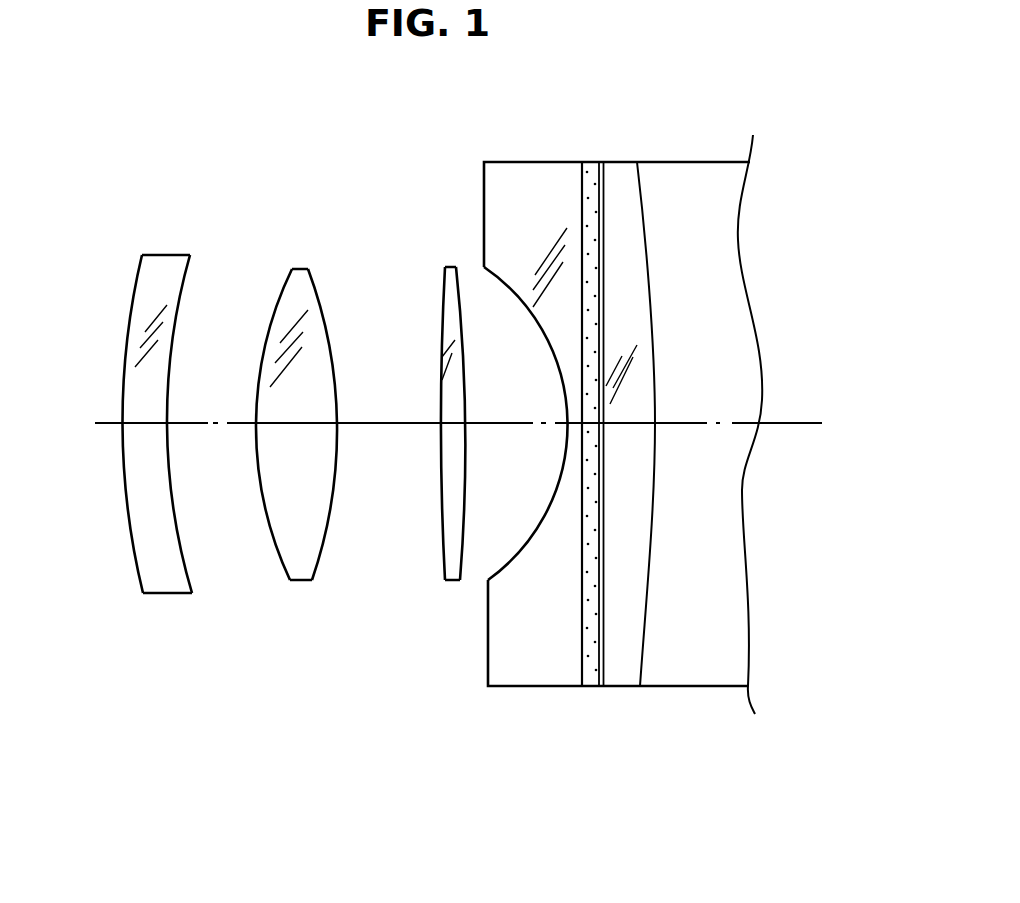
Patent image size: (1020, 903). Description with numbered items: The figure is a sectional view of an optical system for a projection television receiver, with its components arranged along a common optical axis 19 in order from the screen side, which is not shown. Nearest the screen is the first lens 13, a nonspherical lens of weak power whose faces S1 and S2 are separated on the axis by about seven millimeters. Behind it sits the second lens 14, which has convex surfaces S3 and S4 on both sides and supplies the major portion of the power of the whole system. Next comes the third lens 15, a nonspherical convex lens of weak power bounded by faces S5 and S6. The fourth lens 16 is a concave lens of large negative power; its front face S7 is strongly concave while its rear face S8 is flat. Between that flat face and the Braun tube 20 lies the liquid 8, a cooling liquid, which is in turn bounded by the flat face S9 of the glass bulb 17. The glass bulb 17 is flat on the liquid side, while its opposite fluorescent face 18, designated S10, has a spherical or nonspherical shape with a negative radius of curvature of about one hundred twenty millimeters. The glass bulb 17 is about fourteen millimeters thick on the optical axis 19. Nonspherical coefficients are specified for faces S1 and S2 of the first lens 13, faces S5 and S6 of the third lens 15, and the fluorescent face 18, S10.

The liquid 8 is at (595, 472).
The first lens 13 is at (156, 479).
The second lens 14 is at (303, 474).
The third lens 15 is at (458, 423).
The fourth lens 16 is at (561, 421).
The glass bulb 17 is at (715, 460).
The fluorescent face 18 is at (736, 460).
The optical axis 19 is at (798, 421).
The Braun tube 20 is at (715, 421).
The face S1 of the first lens S1 is at (125, 480).
The face S2 of the first lens S2 is at (175, 520).
The face S3 of the second lens S3 is at (258, 437).
The face S4 of the second lens S4 is at (337, 460).
The face S5 of the third lens S5 is at (441, 488).
The face S6 of the third lens S6 is at (466, 396).
The face S7 of the fourth lens S7 is at (517, 298).
The face S8 of the fourth lens S8 is at (578, 196).
The glass bulb face S9 is at (603, 663).
The fluorescent face S10 is at (640, 660).